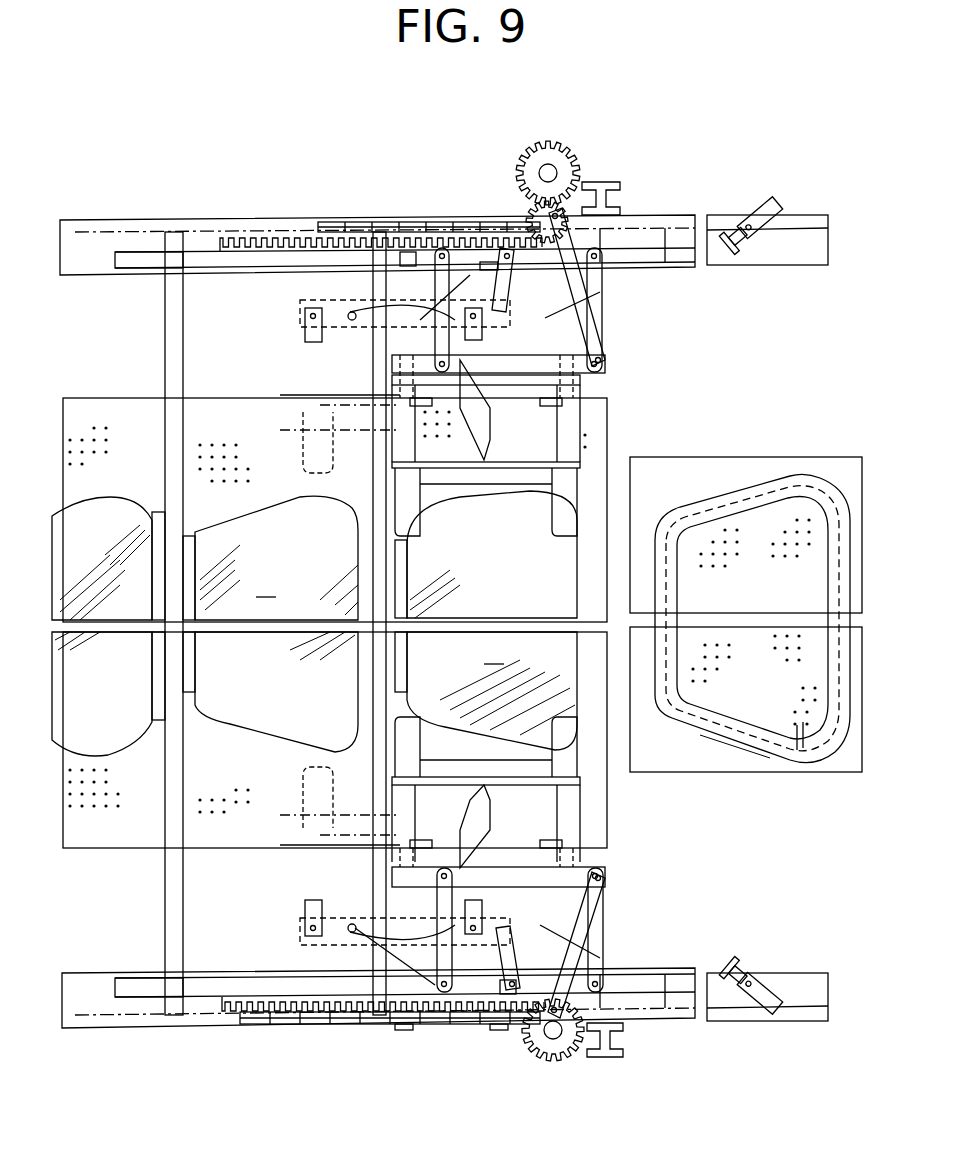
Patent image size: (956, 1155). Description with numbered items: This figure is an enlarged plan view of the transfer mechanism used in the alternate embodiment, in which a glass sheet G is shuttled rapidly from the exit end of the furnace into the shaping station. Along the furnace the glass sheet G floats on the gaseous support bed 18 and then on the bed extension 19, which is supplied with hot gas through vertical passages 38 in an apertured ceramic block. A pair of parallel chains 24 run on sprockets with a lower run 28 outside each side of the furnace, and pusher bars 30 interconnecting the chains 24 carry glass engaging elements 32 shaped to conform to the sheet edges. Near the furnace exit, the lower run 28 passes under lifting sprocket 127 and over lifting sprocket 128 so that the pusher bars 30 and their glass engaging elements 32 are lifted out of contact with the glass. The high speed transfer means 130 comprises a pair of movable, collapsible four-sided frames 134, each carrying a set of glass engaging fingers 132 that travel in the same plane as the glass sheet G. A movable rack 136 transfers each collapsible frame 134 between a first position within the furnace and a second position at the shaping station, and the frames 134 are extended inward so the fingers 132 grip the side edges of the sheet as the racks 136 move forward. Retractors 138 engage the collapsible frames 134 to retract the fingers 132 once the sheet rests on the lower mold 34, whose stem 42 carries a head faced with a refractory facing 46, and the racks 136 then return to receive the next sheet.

The gaseous support bed 18 is at (147, 461).
The bed extension 19 is at (769, 586).
The chains 24 is at (342, 222).
The lower run 28 is at (355, 1024).
The pusher bars 30 is at (165, 297).
The glass engaging elements 32 is at (188, 545).
The lower mold 34 is at (735, 760).
The vertical passages 38 is at (800, 750).
The stem 42 is at (851, 548).
The refractory facing 46 is at (757, 490).
The lifting sprocket 127 is at (420, 1030).
The lifting sprocket 128 is at (505, 1030).
The high speed transfer means 130 is at (660, 305).
The glass engaging fingers 132 is at (565, 500).
The collapsible four-sided frames 134 is at (445, 322).
The movable rack 136 is at (245, 242).
The retractors 138 is at (765, 248).
The glass sheet G is at (314, 623).